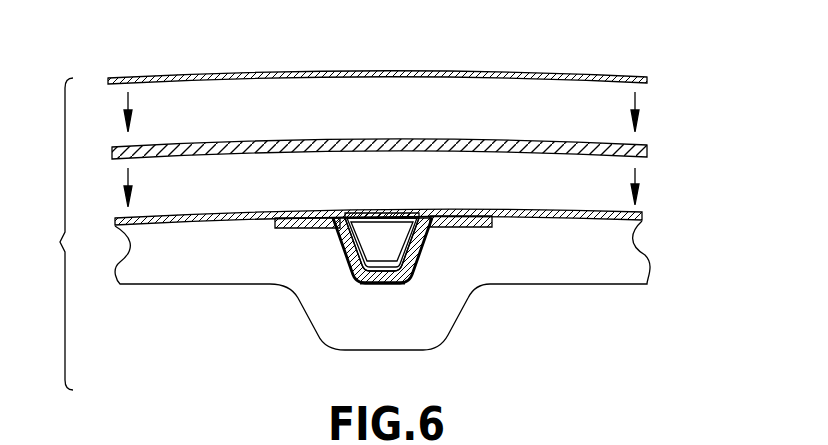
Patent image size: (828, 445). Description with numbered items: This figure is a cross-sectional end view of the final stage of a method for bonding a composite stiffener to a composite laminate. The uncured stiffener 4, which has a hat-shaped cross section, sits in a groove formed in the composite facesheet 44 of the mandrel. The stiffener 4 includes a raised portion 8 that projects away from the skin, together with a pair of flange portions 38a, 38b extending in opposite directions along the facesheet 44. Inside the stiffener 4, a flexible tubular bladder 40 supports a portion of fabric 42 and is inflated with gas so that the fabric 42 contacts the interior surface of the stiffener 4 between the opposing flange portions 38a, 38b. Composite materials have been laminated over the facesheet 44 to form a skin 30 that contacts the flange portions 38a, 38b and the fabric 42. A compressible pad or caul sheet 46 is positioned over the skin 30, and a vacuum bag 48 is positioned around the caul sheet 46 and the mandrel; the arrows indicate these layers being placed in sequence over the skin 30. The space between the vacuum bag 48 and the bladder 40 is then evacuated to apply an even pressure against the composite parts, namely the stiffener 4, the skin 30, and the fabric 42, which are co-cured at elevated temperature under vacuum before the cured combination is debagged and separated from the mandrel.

The vacuum bag 48 is at (488, 68).
The caul sheet 46 is at (487, 138).
The skin 30 is at (640, 215).
The facesheet 44 is at (640, 267).
The flange portion 38a is at (295, 230).
The flange portion 38b is at (482, 227).
The stiffener 4 is at (342, 255).
The bladder 40 is at (400, 224).
The raised portion 8 is at (380, 258).
The fabric 42 is at (368, 283).